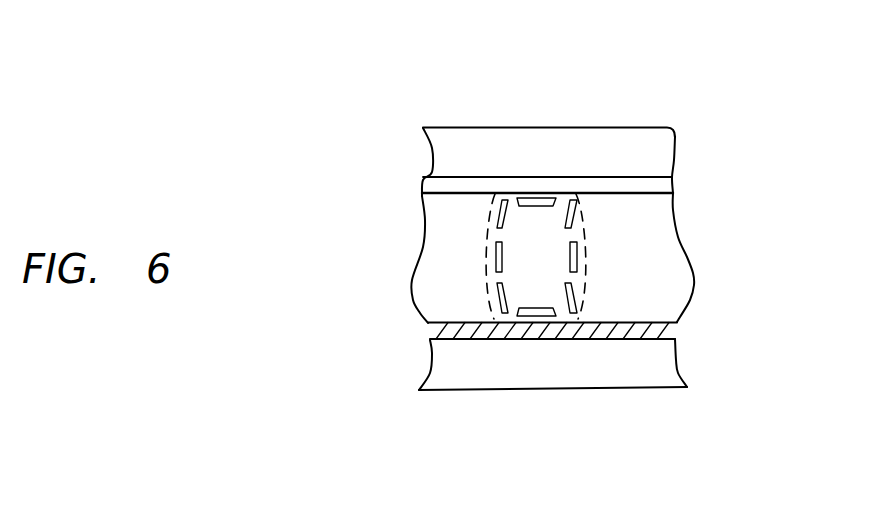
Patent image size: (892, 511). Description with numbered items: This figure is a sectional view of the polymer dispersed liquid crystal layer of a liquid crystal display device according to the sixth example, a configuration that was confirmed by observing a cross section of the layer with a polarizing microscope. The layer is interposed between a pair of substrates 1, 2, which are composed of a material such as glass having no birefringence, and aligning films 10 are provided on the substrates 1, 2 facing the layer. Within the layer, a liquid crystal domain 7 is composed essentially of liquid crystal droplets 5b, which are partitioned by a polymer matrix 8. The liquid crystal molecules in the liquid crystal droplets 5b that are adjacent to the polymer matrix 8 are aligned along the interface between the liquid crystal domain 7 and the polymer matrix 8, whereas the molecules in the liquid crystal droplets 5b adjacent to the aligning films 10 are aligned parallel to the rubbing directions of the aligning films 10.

The substrate 1 is at (672, 370).
The substrate 2 is at (661, 147).
The aligning film 10 is at (672, 182).
The polymer matrix 8 is at (645, 297).
The liquid crystal droplet 5b is at (497, 217).
The liquid crystal domain 7 is at (545, 220).